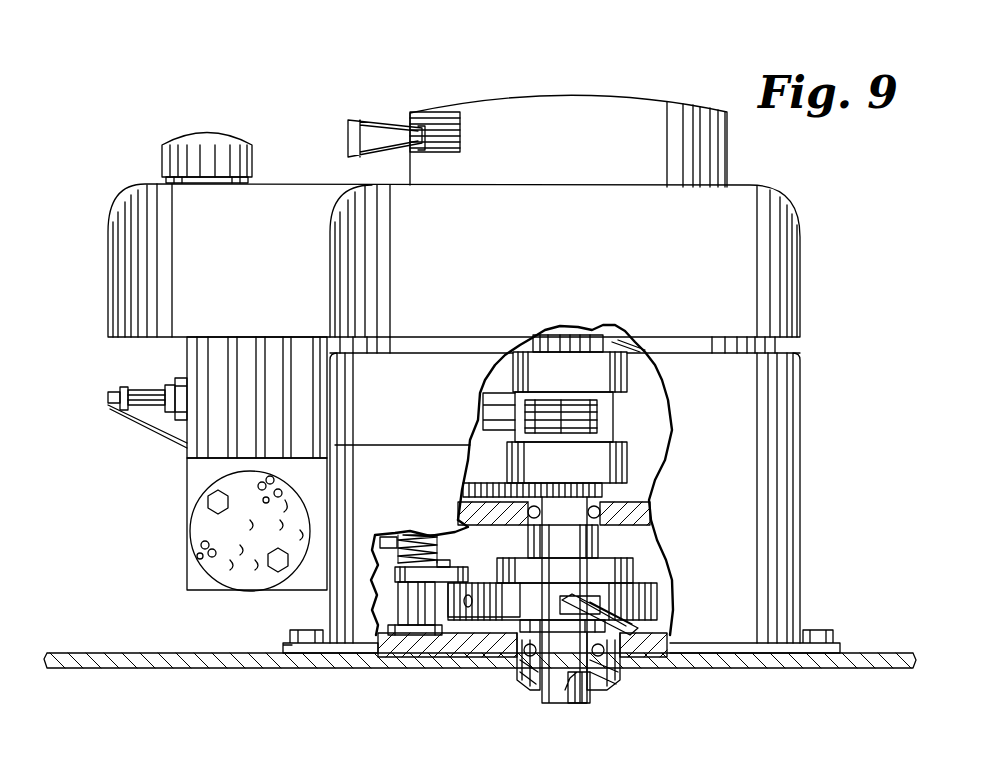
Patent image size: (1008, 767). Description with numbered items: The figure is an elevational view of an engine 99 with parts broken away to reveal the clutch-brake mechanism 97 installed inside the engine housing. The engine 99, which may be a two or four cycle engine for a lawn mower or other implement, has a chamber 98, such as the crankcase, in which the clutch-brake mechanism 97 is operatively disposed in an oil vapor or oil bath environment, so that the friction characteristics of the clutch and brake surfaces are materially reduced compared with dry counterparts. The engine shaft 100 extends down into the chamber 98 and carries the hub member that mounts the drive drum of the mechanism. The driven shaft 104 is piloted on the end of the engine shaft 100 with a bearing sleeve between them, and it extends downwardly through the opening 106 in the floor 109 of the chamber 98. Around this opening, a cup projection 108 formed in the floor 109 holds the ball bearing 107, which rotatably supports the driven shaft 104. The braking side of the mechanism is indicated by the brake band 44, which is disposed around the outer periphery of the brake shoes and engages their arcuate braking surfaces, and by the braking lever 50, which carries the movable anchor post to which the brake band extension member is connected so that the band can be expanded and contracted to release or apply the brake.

The engine 99 is at (800, 240).
The engine shaft 100 is at (570, 512).
The chamber 98 is at (650, 538).
The clutch-brake mechanism 97 is at (652, 553).
The brake band 44 is at (660, 603).
The braking lever 50 is at (438, 567).
The floor 109 is at (460, 656).
The ball bearing 107 is at (517, 672).
The cup projection 108 is at (610, 662).
The driven shaft 104 is at (549, 703).
The opening 106 is at (583, 690).